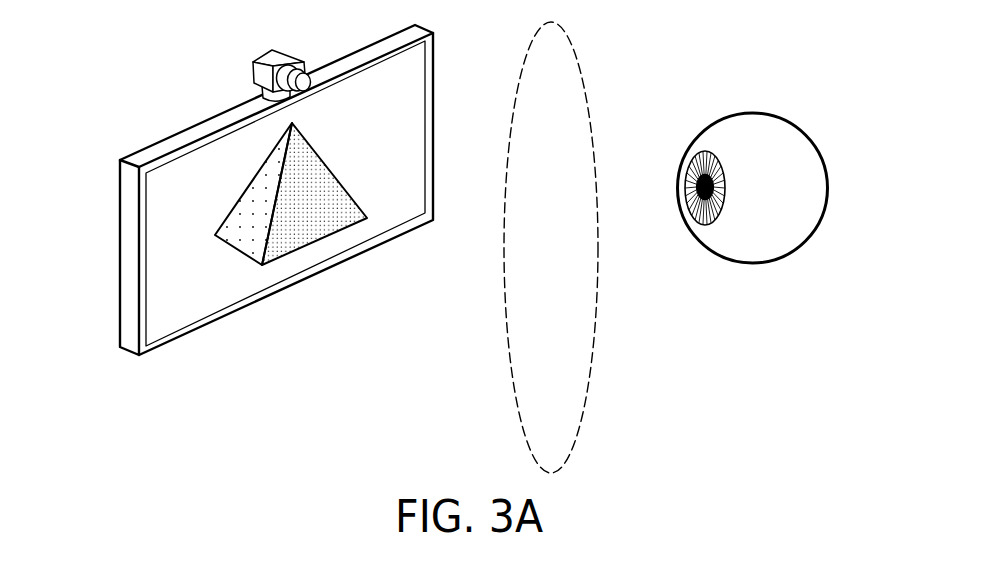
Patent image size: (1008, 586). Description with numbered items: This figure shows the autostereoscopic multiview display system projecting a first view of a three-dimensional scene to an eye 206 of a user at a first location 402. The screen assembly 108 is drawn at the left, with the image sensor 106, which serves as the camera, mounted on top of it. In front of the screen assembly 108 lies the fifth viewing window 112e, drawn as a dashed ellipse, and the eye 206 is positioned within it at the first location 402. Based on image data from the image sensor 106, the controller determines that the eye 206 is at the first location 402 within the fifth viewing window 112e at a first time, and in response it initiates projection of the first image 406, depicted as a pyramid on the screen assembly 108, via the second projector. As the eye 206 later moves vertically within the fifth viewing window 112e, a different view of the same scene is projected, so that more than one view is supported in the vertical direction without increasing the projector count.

The image sensor 106 is at (288, 50).
The screen assembly 108 is at (120, 252).
The fifth viewing window 112e is at (590, 387).
The eye 206 is at (813, 237).
The first location 402 is at (778, 155).
The first image 406 is at (218, 180).